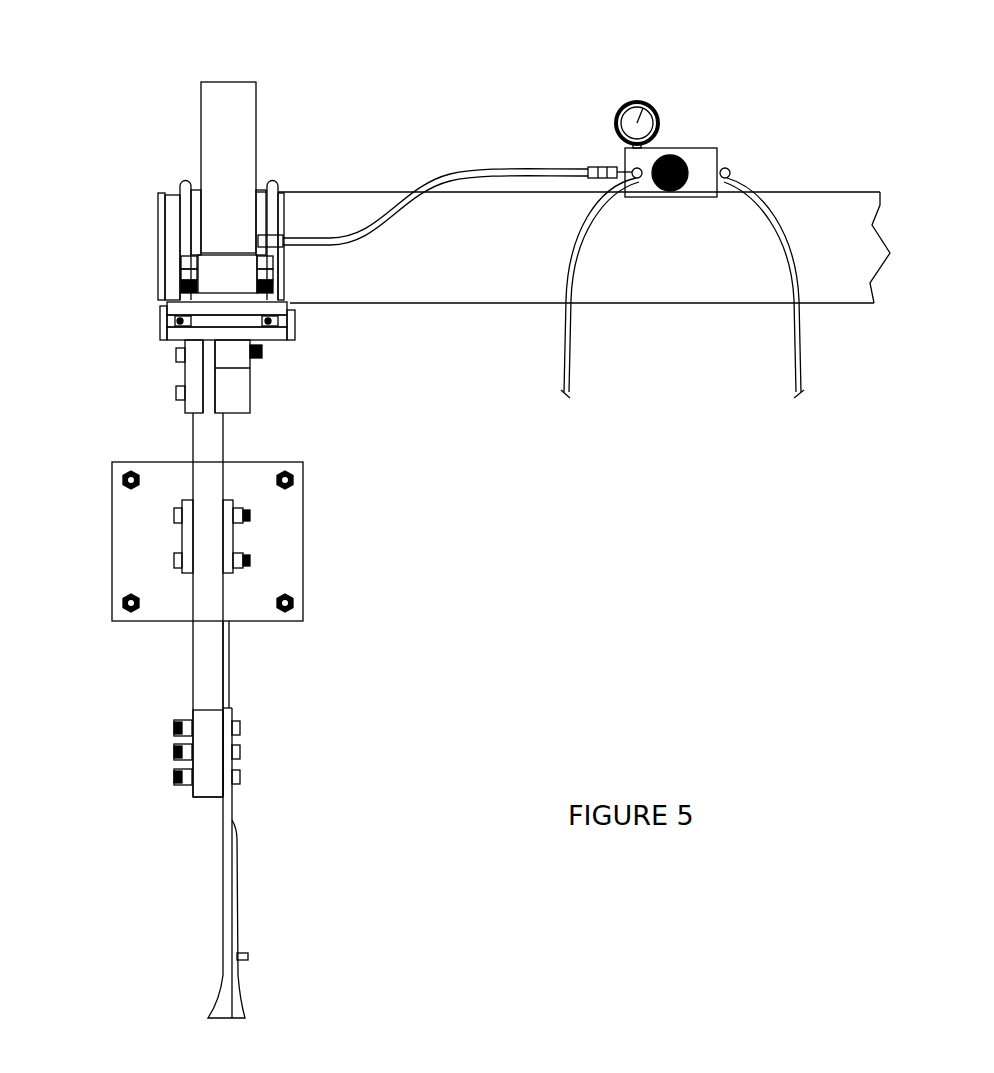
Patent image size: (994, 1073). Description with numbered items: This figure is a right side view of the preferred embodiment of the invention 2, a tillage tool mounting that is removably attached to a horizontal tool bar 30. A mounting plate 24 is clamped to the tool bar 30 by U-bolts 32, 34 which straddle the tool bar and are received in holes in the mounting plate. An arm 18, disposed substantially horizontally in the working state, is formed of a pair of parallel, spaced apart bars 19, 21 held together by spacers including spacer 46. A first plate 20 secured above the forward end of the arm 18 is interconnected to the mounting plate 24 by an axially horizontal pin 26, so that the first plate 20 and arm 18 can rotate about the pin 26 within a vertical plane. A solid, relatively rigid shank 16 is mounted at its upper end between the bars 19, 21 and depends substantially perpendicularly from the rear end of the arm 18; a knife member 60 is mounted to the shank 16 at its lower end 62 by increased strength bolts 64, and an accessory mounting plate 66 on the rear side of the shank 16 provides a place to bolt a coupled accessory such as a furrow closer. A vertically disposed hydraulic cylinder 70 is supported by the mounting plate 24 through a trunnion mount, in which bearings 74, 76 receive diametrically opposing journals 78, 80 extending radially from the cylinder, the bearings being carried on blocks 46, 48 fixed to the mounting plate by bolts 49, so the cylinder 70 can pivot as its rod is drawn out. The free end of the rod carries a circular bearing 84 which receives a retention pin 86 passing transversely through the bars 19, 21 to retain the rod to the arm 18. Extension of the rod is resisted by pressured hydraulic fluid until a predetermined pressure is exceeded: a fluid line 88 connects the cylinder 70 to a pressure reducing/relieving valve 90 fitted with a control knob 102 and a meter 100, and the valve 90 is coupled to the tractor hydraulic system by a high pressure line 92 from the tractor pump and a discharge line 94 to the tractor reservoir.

The invention 2 is at (213, 715).
The shank 16 is at (251, 605).
The arm 18 is at (131, 382).
The bar 19 is at (293, 402).
The first plate 20 is at (278, 338).
The bar 21 is at (247, 400).
The mounting plate 24 is at (172, 324).
The pin 26 is at (176, 346).
The tool bar 30 is at (573, 325).
The U-bolt 32 is at (138, 197).
The U-bolt 34 is at (318, 199).
The spacer / block 46 is at (326, 304).
The block 48 is at (127, 275).
The bolts 49 is at (309, 350).
The knife member 60 is at (270, 819).
The lower end of shank 62 is at (169, 790).
The bolts 64 is at (254, 752).
The accessory mounting plate 66 is at (157, 548).
The hydraulic cylinder 70 is at (267, 127).
The bearing 74 is at (127, 232).
The bearing 76 is at (304, 278).
The journal 78 is at (324, 255).
The journal 80 is at (127, 253).
The circular bearing 84 is at (292, 402).
The retention pin 86 is at (304, 379).
The fluid line 88 is at (445, 151).
The pressure reducing/relieving valve 90 is at (714, 139).
The high pressure line 92 is at (811, 280).
The discharge line 94 is at (611, 288).
The meter 100 is at (727, 122).
The control knob 102 is at (692, 85).